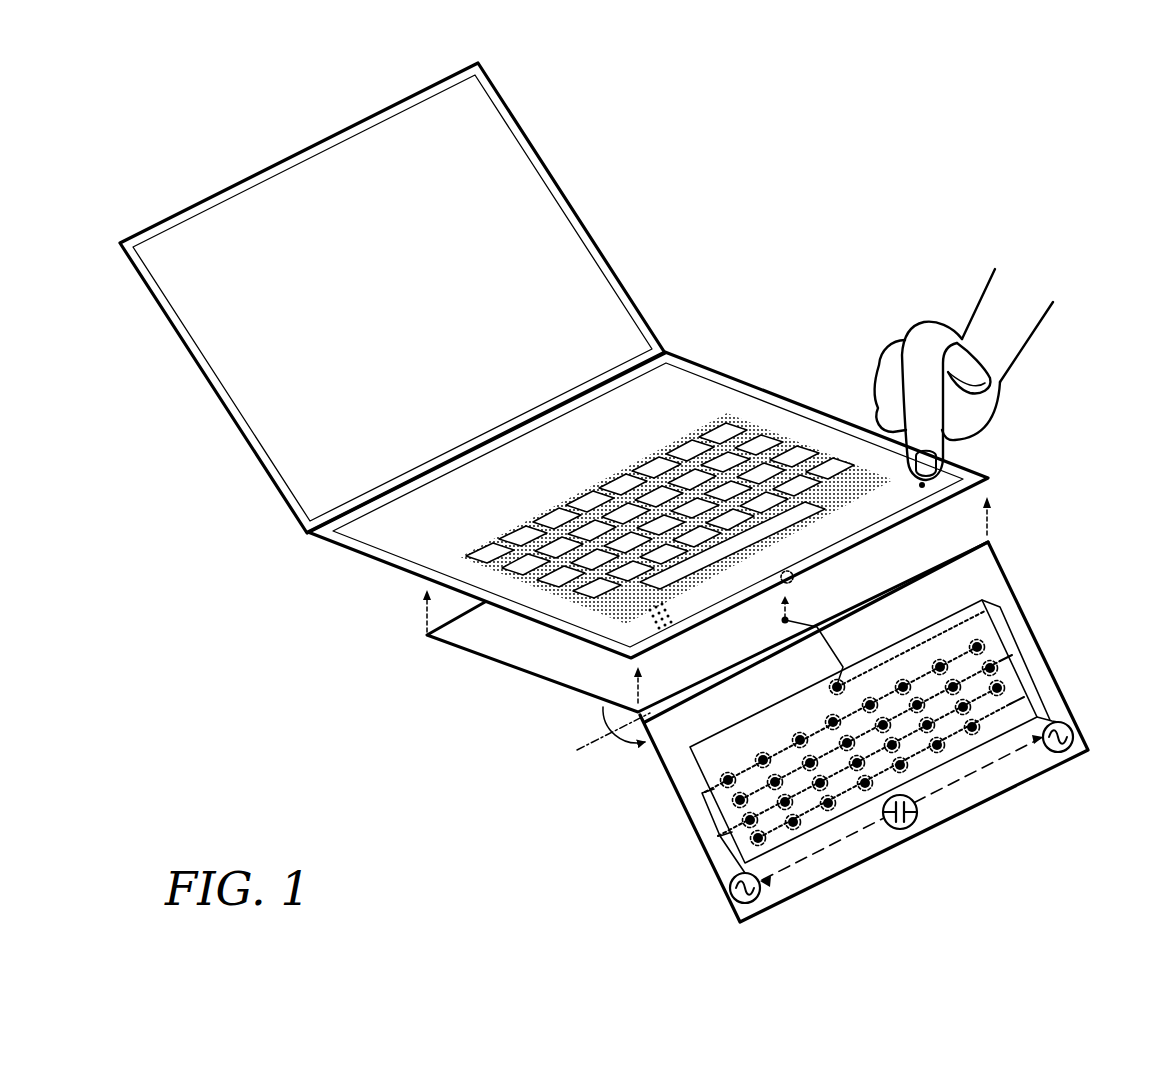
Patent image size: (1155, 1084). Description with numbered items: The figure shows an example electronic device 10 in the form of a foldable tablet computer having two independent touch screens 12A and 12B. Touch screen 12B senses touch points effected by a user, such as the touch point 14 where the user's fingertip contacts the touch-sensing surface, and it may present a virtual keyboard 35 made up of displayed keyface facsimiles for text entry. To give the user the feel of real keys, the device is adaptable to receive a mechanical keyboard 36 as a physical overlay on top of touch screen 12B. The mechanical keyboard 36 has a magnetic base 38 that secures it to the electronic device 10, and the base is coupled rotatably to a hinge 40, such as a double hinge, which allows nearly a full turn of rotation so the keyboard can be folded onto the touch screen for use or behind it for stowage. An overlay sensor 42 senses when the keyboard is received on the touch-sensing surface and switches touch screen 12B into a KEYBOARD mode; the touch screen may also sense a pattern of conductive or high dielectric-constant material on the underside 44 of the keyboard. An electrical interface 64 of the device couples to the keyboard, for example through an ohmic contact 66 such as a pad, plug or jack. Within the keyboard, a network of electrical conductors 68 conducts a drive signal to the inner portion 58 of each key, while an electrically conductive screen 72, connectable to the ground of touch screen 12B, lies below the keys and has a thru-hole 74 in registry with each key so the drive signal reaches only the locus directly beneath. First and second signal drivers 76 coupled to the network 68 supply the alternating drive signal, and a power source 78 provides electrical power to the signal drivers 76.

The electronic device 10 is at (554, 360).
The touch screen 12A is at (480, 137).
The touch screen 12B is at (675, 421).
The touch point 14 is at (920, 488).
The virtual keyboard 35 is at (560, 480).
The mechanical keyboard 36 is at (544, 701).
The magnetic base 38 is at (537, 653).
The hinge 40 is at (990, 543).
The overlay sensor 42 is at (646, 619).
The underside 44 is at (995, 588).
The inner portion 58 is at (828, 717).
The electrical interface 64 is at (781, 575).
The ohmic contact 66 is at (800, 604).
The network of electrical conductors 68 is at (1031, 672).
The electrically conductive screen 72 is at (727, 767).
The thru-hole 74 is at (797, 733).
The signal driver 76 is at (738, 903).
The power source 78 is at (903, 829).